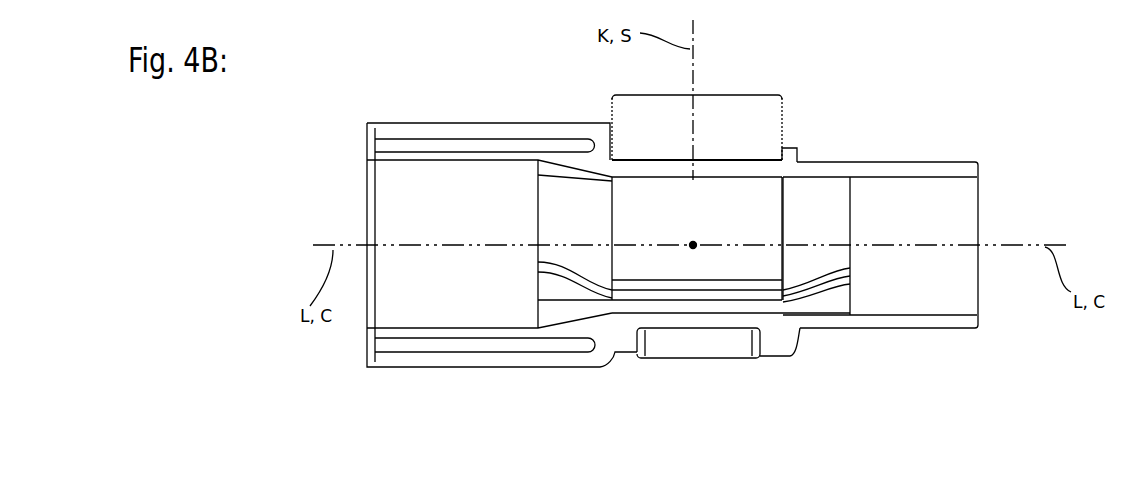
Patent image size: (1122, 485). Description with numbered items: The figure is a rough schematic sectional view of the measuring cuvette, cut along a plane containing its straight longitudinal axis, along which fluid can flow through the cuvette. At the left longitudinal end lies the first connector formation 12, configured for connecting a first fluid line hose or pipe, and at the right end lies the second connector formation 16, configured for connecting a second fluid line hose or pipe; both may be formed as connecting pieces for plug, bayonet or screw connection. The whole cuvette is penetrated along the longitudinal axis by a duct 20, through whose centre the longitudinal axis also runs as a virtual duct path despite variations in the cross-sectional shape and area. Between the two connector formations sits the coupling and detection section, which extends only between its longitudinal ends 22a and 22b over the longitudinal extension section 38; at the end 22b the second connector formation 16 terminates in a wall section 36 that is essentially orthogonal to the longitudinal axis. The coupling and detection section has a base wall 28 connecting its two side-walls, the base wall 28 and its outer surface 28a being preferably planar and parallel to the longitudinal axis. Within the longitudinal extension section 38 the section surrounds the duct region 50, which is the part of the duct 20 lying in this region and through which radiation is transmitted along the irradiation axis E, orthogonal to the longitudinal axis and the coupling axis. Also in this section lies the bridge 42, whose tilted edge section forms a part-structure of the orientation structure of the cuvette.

The first connector formation 12 is at (428, 132).
The second connector formation 16 is at (922, 165).
The duct 20 is at (448, 217).
The longitudinal end of the coupling and detection section 22a is at (614, 160).
The longitudinal end of the coupling and detection section 22b is at (781, 160).
The base wall 28 is at (705, 160).
The outer surface of the base wall 28a is at (685, 160).
The wall section 36 is at (797, 152).
The longitudinal extension section 38 is at (695, 95).
The bridge 42 is at (722, 346).
The duct region 50 is at (731, 245).
The irradiation axis E is at (693, 243).